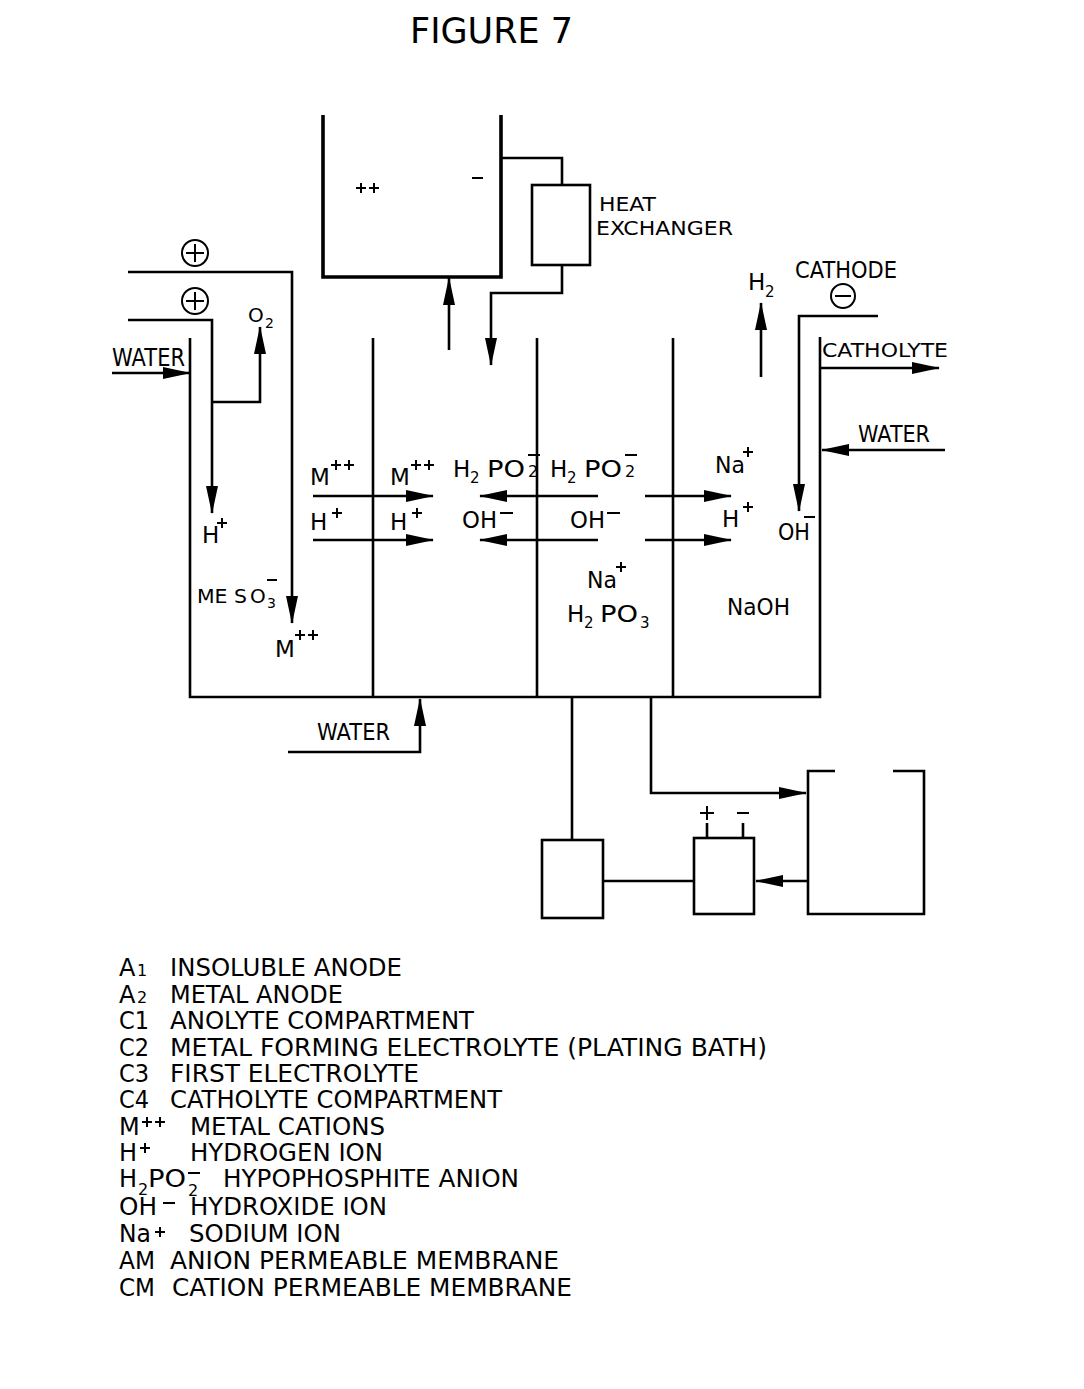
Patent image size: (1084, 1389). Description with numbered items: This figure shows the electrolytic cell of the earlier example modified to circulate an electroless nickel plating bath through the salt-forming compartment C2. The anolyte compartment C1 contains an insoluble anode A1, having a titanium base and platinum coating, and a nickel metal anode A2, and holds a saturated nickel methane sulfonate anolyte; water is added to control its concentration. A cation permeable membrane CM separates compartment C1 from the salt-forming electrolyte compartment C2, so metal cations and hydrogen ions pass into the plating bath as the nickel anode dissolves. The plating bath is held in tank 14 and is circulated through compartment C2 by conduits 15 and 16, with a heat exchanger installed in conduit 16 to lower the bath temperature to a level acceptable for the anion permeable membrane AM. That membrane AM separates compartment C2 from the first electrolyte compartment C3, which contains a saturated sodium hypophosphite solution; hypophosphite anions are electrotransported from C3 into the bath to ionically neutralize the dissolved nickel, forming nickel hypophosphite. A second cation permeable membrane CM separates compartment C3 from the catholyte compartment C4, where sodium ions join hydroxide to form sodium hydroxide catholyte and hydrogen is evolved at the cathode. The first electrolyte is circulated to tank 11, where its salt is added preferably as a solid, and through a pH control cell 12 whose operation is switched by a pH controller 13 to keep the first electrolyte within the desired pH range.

The tank 11 is at (799, 834).
The pH control cell 12 is at (723, 877).
The pH controller 13 is at (547, 822).
The plating bath tank 14 is at (414, 196).
The conduit 15 is at (431, 314).
The conduit 16 is at (531, 155).
The insoluble anode A1 is at (170, 400).
The metal anode A2 is at (210, 431).
The anolyte compartment C1 is at (281, 517).
The salt-forming electrolyte (plating bath) compartment C2 is at (455, 675).
The first electrolyte compartment C3 is at (605, 675).
The catholyte compartment C4 is at (746, 517).
The anion permeable membrane AM is at (538, 503).
The cation permeable membrane CM is at (523, 503).